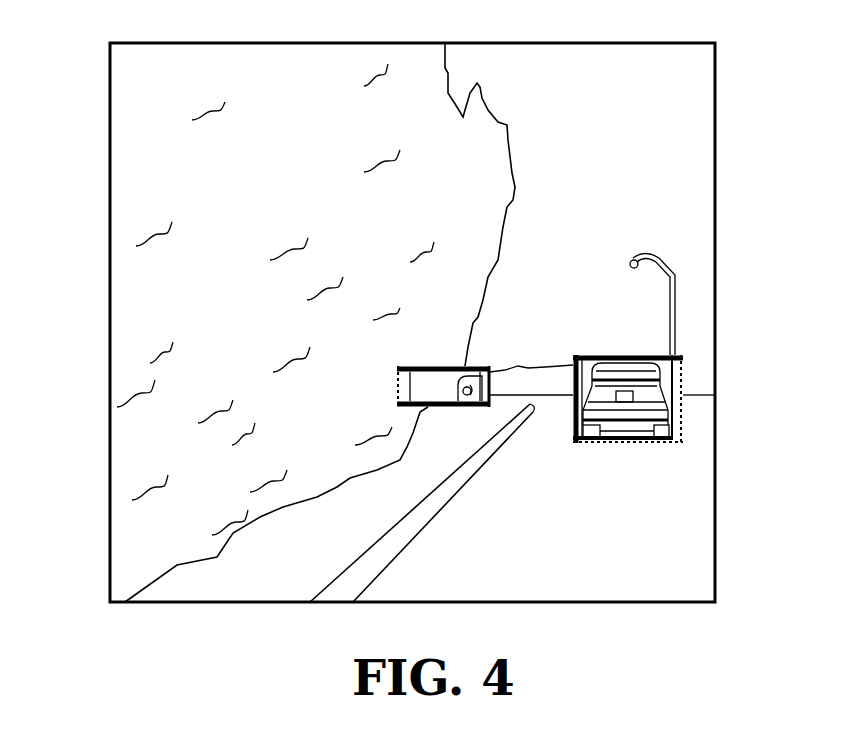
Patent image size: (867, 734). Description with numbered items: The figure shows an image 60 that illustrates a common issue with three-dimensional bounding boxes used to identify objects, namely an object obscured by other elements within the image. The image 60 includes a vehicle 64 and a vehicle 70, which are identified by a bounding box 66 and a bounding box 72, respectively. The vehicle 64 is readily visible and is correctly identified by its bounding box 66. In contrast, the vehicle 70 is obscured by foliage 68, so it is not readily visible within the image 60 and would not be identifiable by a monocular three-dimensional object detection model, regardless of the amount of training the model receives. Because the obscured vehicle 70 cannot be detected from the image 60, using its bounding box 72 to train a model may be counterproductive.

The image 60 is at (750, 138).
The vehicle 64 is at (645, 412).
The bounding box 66 is at (642, 440).
The foliage 68 is at (162, 316).
The vehicle 70 is at (466, 401).
The bounding box 72 is at (452, 407).